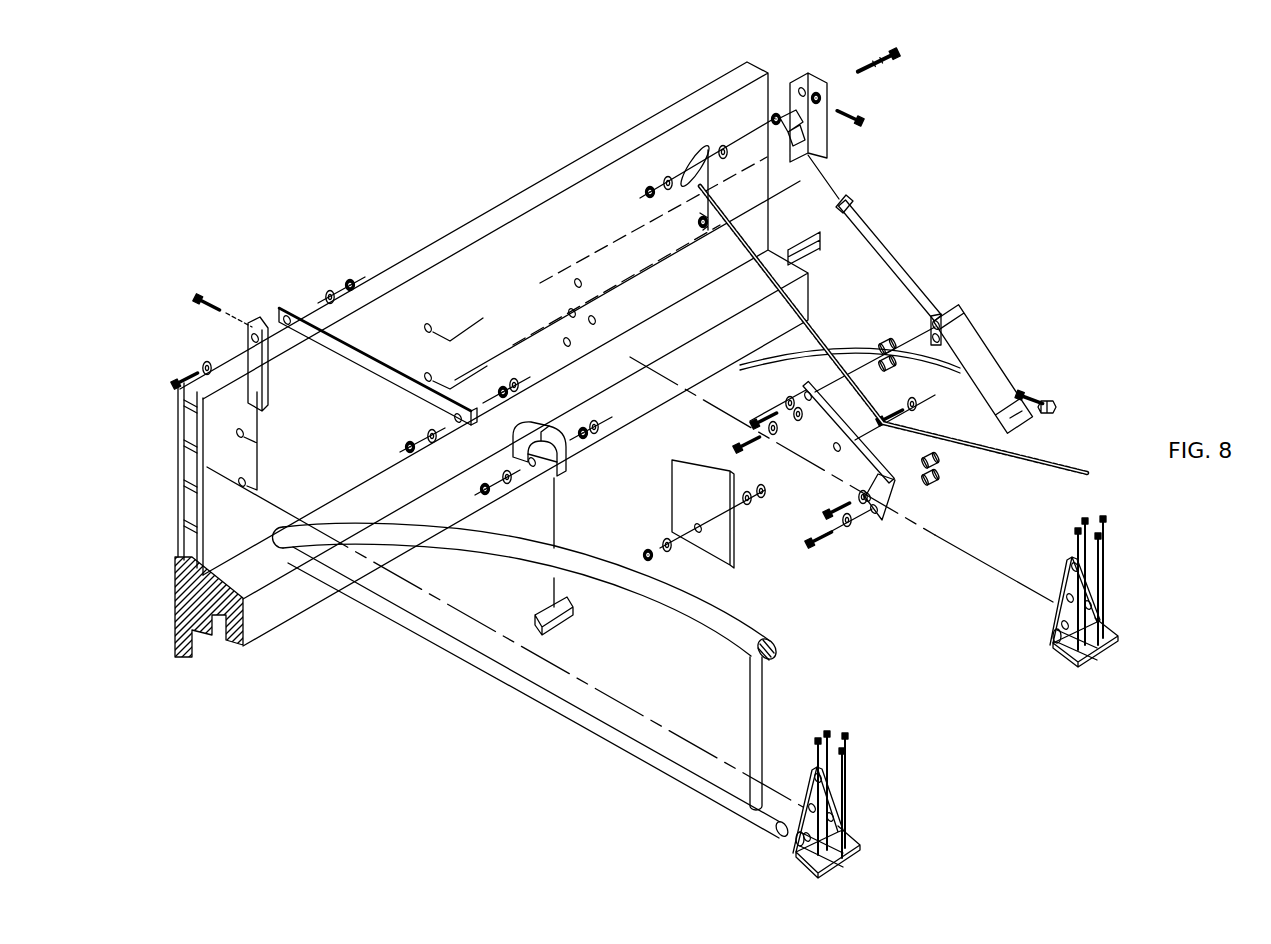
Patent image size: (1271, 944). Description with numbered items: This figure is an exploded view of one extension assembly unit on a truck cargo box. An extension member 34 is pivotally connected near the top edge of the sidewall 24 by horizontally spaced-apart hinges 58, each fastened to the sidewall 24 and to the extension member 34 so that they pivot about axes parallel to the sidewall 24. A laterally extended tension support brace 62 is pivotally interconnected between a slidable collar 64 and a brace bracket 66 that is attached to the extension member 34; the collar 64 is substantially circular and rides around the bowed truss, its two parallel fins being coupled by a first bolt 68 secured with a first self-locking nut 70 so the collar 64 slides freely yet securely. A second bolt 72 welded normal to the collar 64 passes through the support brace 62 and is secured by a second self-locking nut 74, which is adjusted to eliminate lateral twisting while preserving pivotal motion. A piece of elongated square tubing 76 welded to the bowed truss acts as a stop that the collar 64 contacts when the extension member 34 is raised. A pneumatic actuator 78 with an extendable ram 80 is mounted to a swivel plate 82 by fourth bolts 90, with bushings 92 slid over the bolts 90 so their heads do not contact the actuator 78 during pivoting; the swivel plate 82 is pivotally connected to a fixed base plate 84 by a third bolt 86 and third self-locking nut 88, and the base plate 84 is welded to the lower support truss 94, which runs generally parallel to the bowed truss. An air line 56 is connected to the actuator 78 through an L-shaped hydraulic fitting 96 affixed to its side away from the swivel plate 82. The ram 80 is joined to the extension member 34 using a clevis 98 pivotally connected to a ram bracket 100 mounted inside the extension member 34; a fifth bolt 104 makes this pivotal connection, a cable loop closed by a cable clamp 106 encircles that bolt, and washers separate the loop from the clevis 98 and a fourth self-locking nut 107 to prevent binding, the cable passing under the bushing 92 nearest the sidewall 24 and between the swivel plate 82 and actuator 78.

The sidewall 24 is at (200, 660).
The extension member 34 is at (565, 162).
The air line 56 is at (817, 260).
The hinge 58 is at (1053, 627).
The tension support brace 62 is at (350, 376).
The collar 64 is at (567, 470).
The brace bracket 66 is at (256, 320).
The first bolt 68 is at (600, 433).
The first self-locking nut 70 is at (495, 490).
The second bolt 72 is at (502, 386).
The second self-locking nut 74 is at (405, 443).
The elongated square tubing 76 is at (570, 625).
The pneumatic actuator 78 is at (985, 338).
The extendable ram 80 is at (897, 263).
The swivel plate 82 is at (867, 510).
The base plate 84 is at (738, 548).
The third bolt 86 is at (905, 403).
The third self-locking nut 88 is at (645, 551).
The fourth bolt 90 is at (740, 447).
The bushing 92 is at (886, 360).
The lower support truss 94 is at (552, 707).
The L-shaped hydraulic fitting 96 is at (1055, 405).
The clevis 98 is at (773, 110).
The ram bracket 100 is at (830, 133).
The fifth bolt 104 is at (897, 58).
The cable clamp 106 is at (703, 143).
The fourth self-locking nut 107 is at (650, 188).